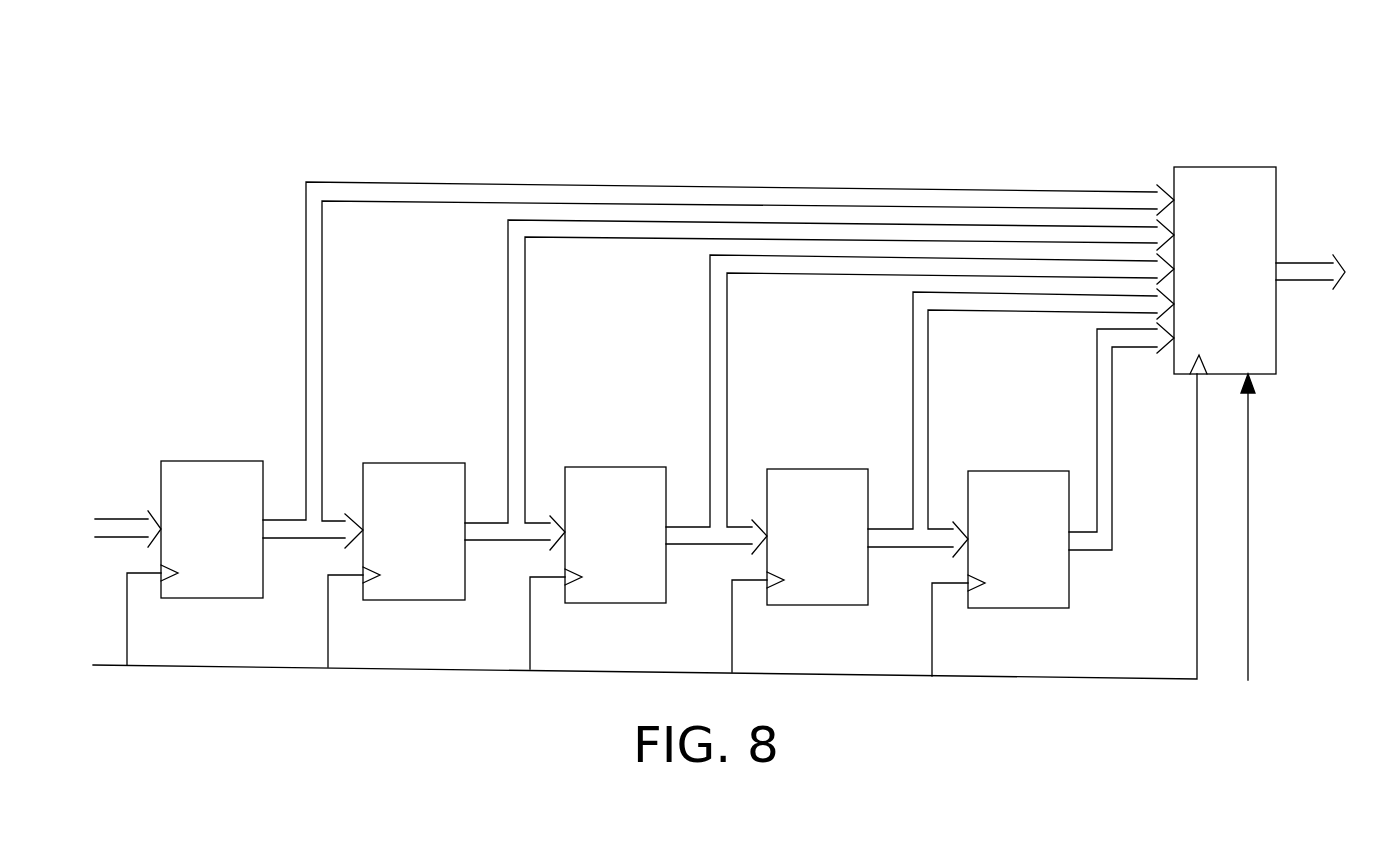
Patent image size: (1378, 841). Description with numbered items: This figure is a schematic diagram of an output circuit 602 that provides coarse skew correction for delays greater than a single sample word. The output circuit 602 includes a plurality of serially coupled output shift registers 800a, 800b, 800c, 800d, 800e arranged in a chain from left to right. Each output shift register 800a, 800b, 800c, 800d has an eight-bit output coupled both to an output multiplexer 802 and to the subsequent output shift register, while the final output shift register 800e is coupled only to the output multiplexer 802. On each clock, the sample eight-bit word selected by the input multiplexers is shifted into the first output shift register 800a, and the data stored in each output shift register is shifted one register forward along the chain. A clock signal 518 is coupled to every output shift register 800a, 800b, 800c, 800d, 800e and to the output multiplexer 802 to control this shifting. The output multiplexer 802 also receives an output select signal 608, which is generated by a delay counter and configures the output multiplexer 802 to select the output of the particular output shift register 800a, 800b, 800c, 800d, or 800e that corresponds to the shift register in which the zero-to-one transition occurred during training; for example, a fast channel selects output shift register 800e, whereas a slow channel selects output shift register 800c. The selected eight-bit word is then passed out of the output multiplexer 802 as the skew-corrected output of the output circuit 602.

The output circuit 602 is at (1074, 118).
The output shift register 800a is at (186, 538).
The output shift register 800b is at (388, 540).
The output shift register 800c is at (641, 544).
The output shift register 800d is at (791, 546).
The output shift register 800e is at (992, 548).
The output multiplexer 802 is at (1201, 279).
The clock signal 518 is at (222, 665).
The output select signal 608 is at (1248, 643).